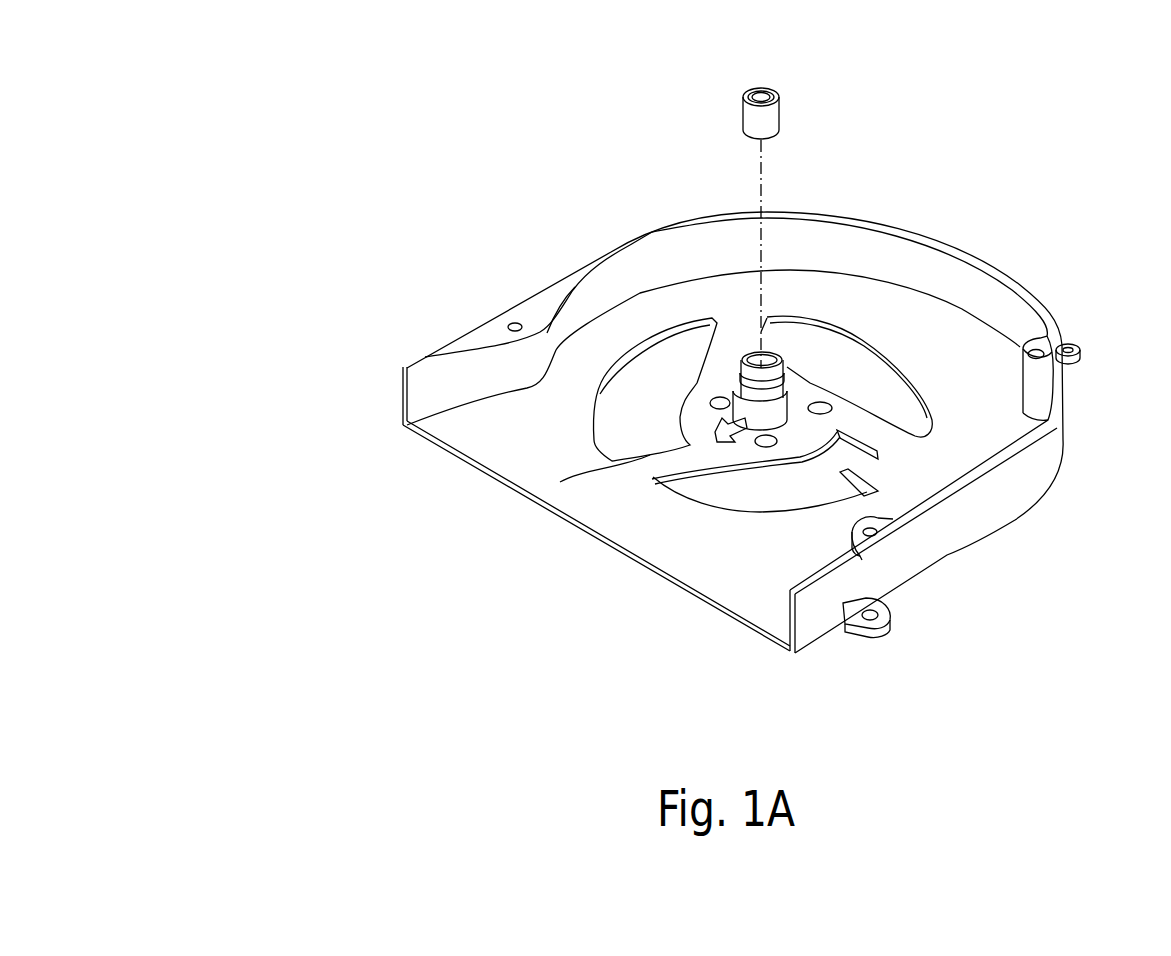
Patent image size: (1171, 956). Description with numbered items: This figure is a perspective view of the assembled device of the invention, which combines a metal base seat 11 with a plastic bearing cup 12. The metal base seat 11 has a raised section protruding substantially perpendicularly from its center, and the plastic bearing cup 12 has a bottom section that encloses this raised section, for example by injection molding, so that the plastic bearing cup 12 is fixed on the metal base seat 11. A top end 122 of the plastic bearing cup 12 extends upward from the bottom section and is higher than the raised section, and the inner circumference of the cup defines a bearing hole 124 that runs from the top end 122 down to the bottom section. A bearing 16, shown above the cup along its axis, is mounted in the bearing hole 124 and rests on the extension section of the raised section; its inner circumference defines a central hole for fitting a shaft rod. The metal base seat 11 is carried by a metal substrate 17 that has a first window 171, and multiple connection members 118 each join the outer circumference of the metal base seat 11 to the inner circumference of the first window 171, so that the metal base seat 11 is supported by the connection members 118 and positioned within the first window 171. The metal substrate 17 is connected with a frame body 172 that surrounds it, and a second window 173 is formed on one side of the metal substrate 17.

The metal base seat 11 is at (808, 390).
The plastic bearing cup 12 is at (763, 395).
The bearing 16 is at (772, 122).
The metal substrate 17 is at (512, 447).
The connection member 118 is at (673, 462).
The top end 122 is at (757, 352).
The bearing hole 124 is at (757, 352).
The first window 171 is at (633, 413).
The frame body 172 is at (574, 290).
The second window 173 is at (560, 482).